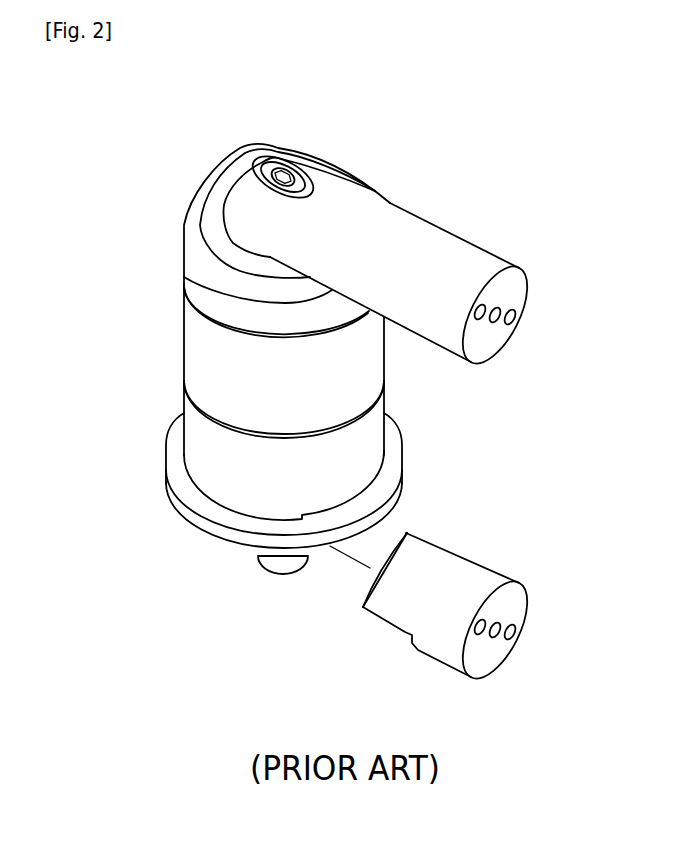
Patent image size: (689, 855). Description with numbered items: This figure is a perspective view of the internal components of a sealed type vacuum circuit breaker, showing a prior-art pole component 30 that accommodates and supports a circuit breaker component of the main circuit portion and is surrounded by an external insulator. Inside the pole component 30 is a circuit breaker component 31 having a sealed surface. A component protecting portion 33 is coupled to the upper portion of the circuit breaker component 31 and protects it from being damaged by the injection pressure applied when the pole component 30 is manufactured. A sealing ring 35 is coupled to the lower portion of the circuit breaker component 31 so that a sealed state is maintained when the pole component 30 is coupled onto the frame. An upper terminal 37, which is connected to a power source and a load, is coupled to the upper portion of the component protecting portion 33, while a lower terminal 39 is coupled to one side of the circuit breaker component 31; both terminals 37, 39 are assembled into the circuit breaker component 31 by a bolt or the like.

The pole component 30 is at (170, 101).
The circuit breaker component 31 is at (222, 463).
The component protecting portion 33 is at (223, 270).
The sealing ring 35 is at (239, 540).
The upper terminal 37 is at (452, 225).
The lower terminal 39 is at (485, 558).